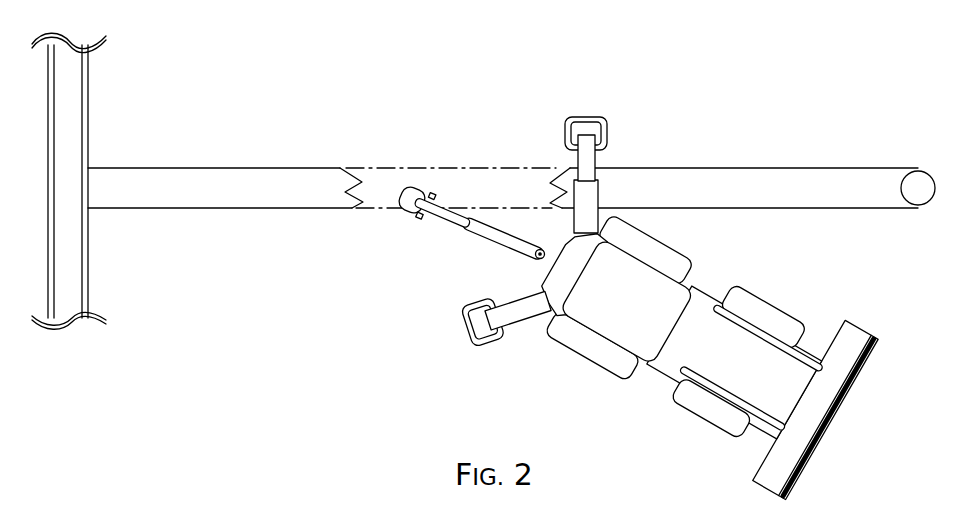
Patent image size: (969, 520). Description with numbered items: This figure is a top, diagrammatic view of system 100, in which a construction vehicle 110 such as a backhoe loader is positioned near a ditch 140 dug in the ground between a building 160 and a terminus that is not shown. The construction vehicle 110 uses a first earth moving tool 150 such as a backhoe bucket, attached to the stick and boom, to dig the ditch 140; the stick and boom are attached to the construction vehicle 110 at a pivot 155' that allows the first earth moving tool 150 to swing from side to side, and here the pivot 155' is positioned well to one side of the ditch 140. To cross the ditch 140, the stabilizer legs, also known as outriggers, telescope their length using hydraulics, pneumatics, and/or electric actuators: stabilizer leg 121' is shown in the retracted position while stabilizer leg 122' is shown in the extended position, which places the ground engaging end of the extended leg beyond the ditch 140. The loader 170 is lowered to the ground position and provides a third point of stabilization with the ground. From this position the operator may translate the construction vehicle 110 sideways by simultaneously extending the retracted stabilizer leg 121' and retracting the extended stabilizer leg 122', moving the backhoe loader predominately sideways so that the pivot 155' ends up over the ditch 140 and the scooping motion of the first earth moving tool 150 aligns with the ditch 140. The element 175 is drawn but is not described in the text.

The system 100 is at (275, 113).
The construction vehicle 110 is at (679, 332).
The stabilizer leg 121' is at (508, 349).
The stabilizer leg 122' is at (636, 175).
The ditch 140 is at (503, 188).
The first earth moving tool 150 is at (400, 166).
The pivot 155' is at (471, 266).
The building 160 is at (100, 272).
The loader 170 is at (843, 412).
The end stop 175 is at (914, 160).